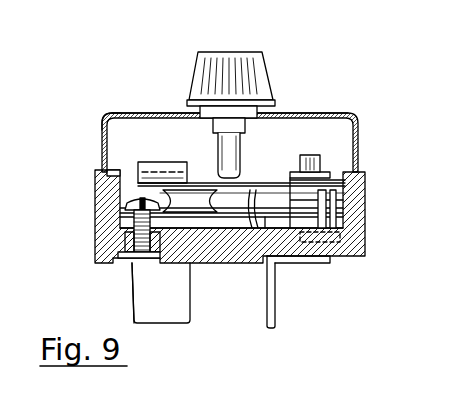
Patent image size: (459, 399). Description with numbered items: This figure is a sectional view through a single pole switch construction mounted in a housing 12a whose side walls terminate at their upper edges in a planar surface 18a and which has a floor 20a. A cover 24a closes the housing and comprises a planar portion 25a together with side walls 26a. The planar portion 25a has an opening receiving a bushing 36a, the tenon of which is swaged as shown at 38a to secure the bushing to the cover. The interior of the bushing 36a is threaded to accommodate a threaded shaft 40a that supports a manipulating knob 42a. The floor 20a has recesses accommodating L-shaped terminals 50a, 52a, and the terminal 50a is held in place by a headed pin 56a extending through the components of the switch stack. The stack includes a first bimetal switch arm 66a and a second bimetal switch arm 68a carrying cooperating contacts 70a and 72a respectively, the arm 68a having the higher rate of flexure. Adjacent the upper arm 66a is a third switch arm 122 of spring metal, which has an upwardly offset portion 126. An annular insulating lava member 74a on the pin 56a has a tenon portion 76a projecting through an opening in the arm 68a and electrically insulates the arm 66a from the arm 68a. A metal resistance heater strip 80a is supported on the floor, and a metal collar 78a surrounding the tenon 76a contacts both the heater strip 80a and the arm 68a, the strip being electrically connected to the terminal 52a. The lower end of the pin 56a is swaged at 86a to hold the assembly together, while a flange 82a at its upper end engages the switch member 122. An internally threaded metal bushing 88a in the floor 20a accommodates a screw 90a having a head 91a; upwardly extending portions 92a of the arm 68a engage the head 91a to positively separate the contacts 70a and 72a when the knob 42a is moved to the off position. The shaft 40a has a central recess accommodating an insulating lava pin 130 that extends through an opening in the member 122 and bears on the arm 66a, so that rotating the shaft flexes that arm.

The housing 12a is at (372, 249).
The planar surface 18a is at (113, 172).
The floor 20a is at (190, 296).
The cover 24a is at (100, 106).
The planar portion 25a is at (131, 113).
The side walls 26a is at (103, 138).
The bushing 36a is at (192, 190).
The swaged tenon portion 38a is at (313, 94).
The threaded shaft 40a is at (216, 133).
The manipulating knob 42a is at (237, 105).
The L-shaped terminal 50a is at (276, 318).
The L-shaped terminal 52a is at (132, 309).
The headed shaft or pin 56a is at (325, 160).
The first switch arm 66a is at (330, 190).
The second switch arm 68a is at (253, 192).
The contact 70a is at (203, 190).
The contact 72a is at (215, 206).
The annular member 74a is at (328, 202).
The tenon portion 76a is at (334, 238).
The metal collar 78a is at (335, 221).
The resistance heater strip 80a is at (178, 281).
The flange or abutment 82a is at (330, 178).
The swaged lower end 86a is at (296, 264).
The internally threaded metal bushing 88a is at (127, 245).
The screw 90a is at (133, 222).
The screw head 91a is at (128, 200).
The upwardly extending portions 92a is at (141, 199).
The third switch arm 122 is at (262, 186).
The upwardly offset portion 126 is at (150, 163).
The insulating lava strut or pin 130 is at (224, 175).